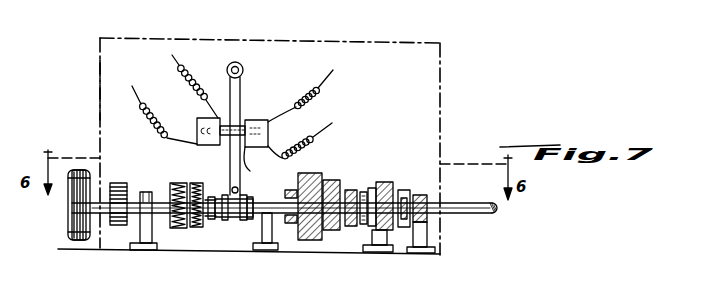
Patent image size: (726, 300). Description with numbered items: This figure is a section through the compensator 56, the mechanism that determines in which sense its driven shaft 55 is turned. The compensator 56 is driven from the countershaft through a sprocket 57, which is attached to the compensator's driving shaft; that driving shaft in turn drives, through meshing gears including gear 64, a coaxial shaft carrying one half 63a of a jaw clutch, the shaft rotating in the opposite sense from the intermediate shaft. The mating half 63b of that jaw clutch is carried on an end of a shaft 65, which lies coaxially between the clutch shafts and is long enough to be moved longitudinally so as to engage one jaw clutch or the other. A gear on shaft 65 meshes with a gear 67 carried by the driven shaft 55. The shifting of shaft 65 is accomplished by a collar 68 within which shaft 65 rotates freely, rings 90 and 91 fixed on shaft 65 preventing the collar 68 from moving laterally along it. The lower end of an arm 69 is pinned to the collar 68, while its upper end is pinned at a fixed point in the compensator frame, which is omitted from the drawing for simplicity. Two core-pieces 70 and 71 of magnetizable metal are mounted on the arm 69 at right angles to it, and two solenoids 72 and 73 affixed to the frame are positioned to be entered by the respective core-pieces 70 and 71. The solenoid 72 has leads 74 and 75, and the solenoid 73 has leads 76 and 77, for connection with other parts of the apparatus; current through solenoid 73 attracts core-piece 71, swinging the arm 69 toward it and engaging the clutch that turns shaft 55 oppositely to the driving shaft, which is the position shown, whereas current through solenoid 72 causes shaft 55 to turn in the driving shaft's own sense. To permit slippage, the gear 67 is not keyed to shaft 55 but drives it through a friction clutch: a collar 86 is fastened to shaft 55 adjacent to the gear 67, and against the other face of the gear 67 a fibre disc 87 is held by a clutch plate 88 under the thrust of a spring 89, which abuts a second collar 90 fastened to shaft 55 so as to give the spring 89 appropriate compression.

The shaft 55 is at (474, 208).
The compensator 56 is at (118, 102).
The sprocket 57 is at (68, 227).
The jaw clutch half 63a is at (177, 183).
The jaw clutch half 63b is at (200, 228).
The gear 64 is at (118, 225).
The shaft 65 is at (215, 210).
The gear 67 is at (331, 160).
The collar 68 is at (228, 217).
The arm 69 is at (242, 104).
The core-piece 70 is at (223, 135).
The core-piece 71 is at (243, 147).
The solenoid 72 is at (200, 118).
The solenoid 73 is at (268, 131).
The lead 74 is at (187, 65).
The lead 75 is at (163, 80).
The lead 76 is at (323, 88).
The lead 77 is at (332, 124).
The collar 86 is at (297, 224).
The fibre disc 87 is at (323, 231).
The clutch plate 88 is at (333, 230).
The spring 89 is at (363, 193).
The ring / second collar 90 is at (393, 184).
The ring 91 is at (250, 186).